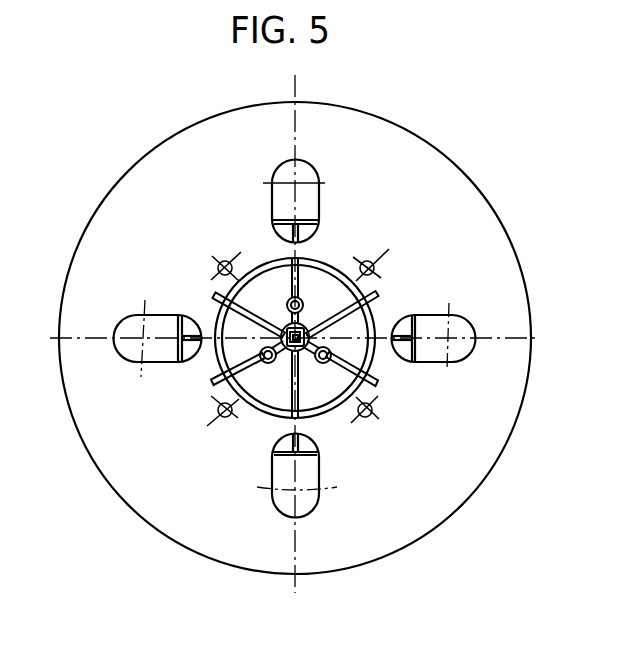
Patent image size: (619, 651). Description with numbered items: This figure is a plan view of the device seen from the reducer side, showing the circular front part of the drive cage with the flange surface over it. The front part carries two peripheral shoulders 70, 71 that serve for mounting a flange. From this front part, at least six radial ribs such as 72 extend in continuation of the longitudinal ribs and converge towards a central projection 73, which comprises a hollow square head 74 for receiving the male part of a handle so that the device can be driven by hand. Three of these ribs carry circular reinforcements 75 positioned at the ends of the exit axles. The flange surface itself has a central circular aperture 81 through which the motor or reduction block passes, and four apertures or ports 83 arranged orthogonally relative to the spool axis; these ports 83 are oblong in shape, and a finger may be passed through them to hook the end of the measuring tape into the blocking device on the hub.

The peripheral shoulder 70 is at (378, 290).
The peripheral shoulder 71 is at (342, 314).
The radial rib 72 is at (337, 362).
The central projection 73 is at (307, 319).
The hollow square head 74 is at (291, 346).
The circular reinforcement 75 is at (329, 351).
The central circular aperture 81 is at (325, 258).
The aperture or port 83 is at (460, 347).